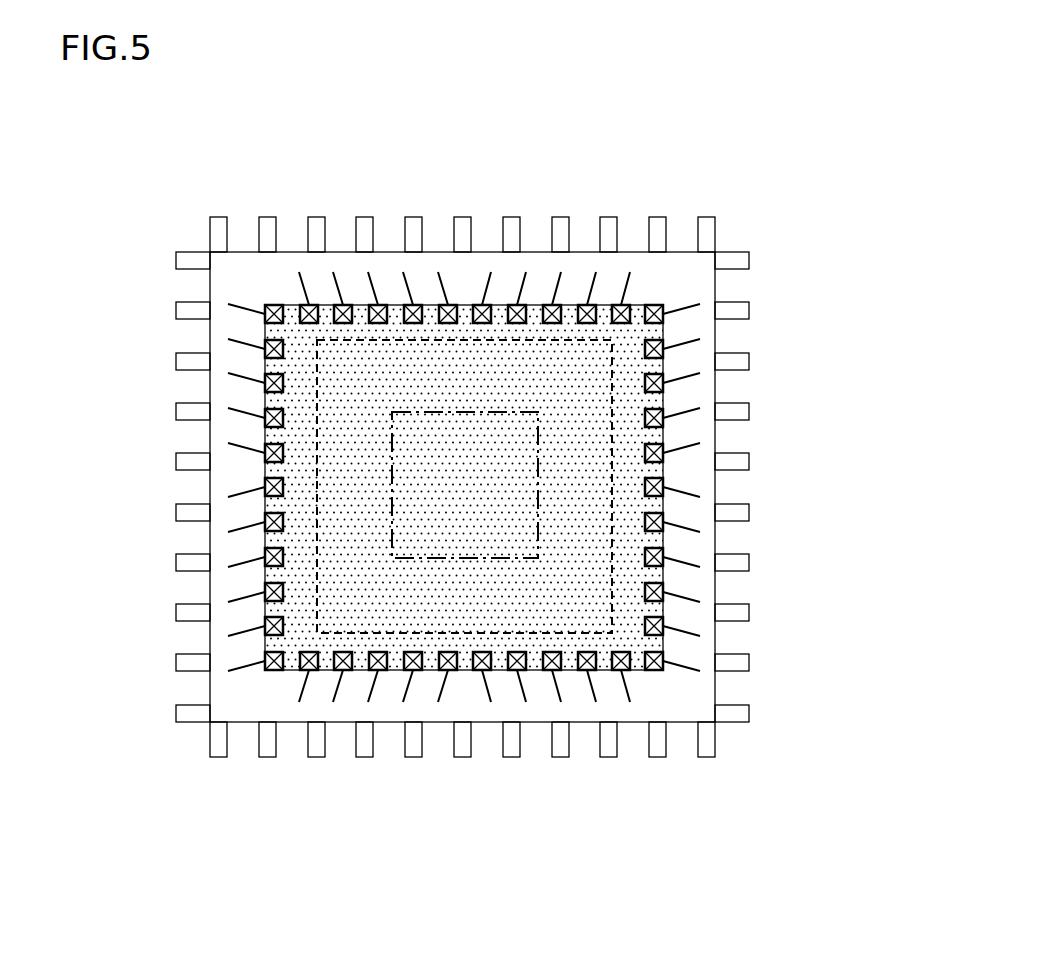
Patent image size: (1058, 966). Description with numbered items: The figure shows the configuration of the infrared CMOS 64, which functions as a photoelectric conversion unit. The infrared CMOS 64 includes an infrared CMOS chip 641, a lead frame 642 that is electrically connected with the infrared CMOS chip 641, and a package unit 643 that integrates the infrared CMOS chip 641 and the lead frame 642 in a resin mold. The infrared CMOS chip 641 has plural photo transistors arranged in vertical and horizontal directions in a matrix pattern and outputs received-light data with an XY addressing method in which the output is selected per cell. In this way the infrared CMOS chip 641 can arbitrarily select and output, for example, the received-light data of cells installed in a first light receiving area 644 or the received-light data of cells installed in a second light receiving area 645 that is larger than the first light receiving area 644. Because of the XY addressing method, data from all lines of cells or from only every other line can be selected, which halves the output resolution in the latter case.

The infrared CMOS 64 is at (748, 182).
The infrared CMOS chip 641 is at (568, 643).
The lead frame 642 is at (412, 217).
The package unit 643 is at (247, 703).
The first light receiving area 644 is at (484, 412).
The second light receiving area 645 is at (362, 337).